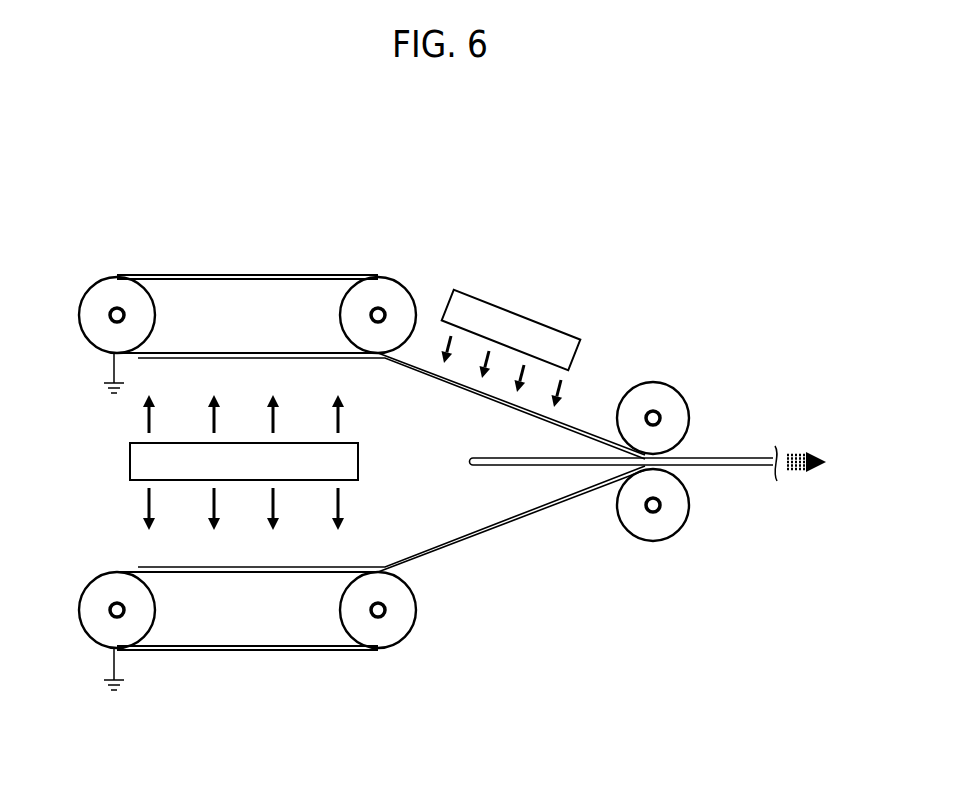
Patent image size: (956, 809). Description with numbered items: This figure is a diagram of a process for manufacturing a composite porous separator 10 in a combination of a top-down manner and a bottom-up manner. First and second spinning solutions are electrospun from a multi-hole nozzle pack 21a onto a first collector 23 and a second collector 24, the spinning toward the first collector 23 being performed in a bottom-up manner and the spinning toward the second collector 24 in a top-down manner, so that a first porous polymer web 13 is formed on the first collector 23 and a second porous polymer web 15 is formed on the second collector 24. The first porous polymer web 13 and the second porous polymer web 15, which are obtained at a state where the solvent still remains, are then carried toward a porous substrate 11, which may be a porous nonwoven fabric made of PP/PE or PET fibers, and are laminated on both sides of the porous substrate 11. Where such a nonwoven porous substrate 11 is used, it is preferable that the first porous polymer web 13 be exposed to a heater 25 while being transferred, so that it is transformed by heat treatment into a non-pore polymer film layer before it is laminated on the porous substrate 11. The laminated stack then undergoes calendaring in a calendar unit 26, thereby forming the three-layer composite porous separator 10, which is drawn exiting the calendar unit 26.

The composite porous separator 10 is at (745, 456).
The porous substrate 11 is at (490, 457).
The first porous polymer web 13 is at (574, 431).
The second porous polymer web 15 is at (500, 525).
The multi-hole nozzle pack 21a is at (130, 465).
The first collector 23 is at (335, 273).
The second collector 24 is at (320, 650).
The heater 25 is at (530, 320).
The calendar unit 26 is at (680, 369).